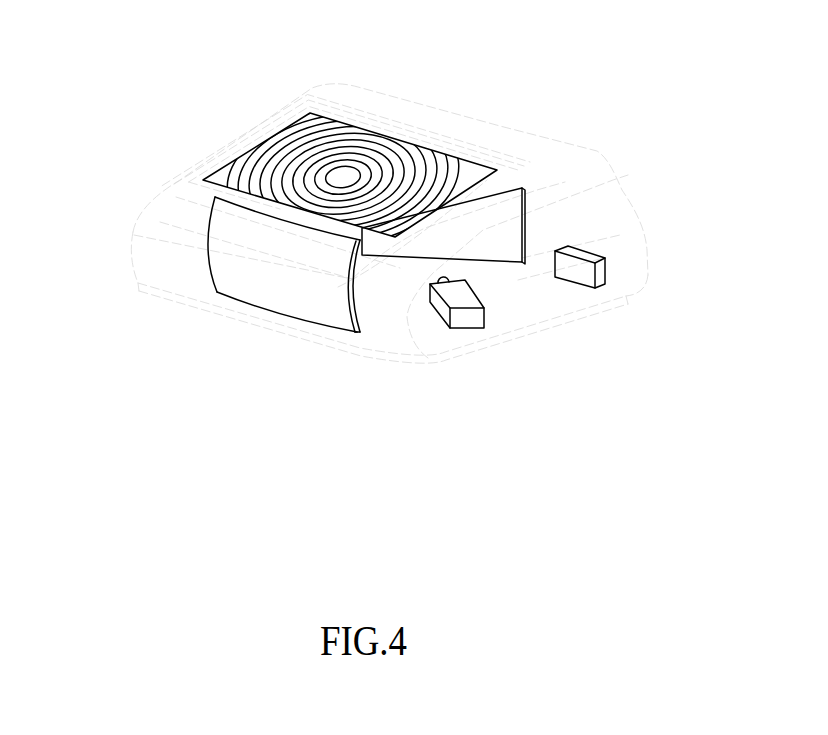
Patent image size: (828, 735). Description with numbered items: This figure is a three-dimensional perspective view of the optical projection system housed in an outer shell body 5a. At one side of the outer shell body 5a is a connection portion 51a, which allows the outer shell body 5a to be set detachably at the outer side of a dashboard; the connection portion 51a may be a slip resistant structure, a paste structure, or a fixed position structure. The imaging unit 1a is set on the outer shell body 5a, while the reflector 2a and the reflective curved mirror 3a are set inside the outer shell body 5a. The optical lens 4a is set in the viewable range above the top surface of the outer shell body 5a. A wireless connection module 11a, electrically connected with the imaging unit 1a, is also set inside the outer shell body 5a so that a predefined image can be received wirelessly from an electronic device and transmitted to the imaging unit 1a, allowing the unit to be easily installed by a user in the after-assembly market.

The imaging unit 1a is at (465, 329).
The reflector 2a is at (525, 228).
The reflective curved mirror 3a is at (203, 250).
The optical lens 4a is at (430, 207).
The outer shell body 5a is at (392, 96).
The wireless connection module 11a is at (597, 257).
The connection portion 51a is at (522, 323).